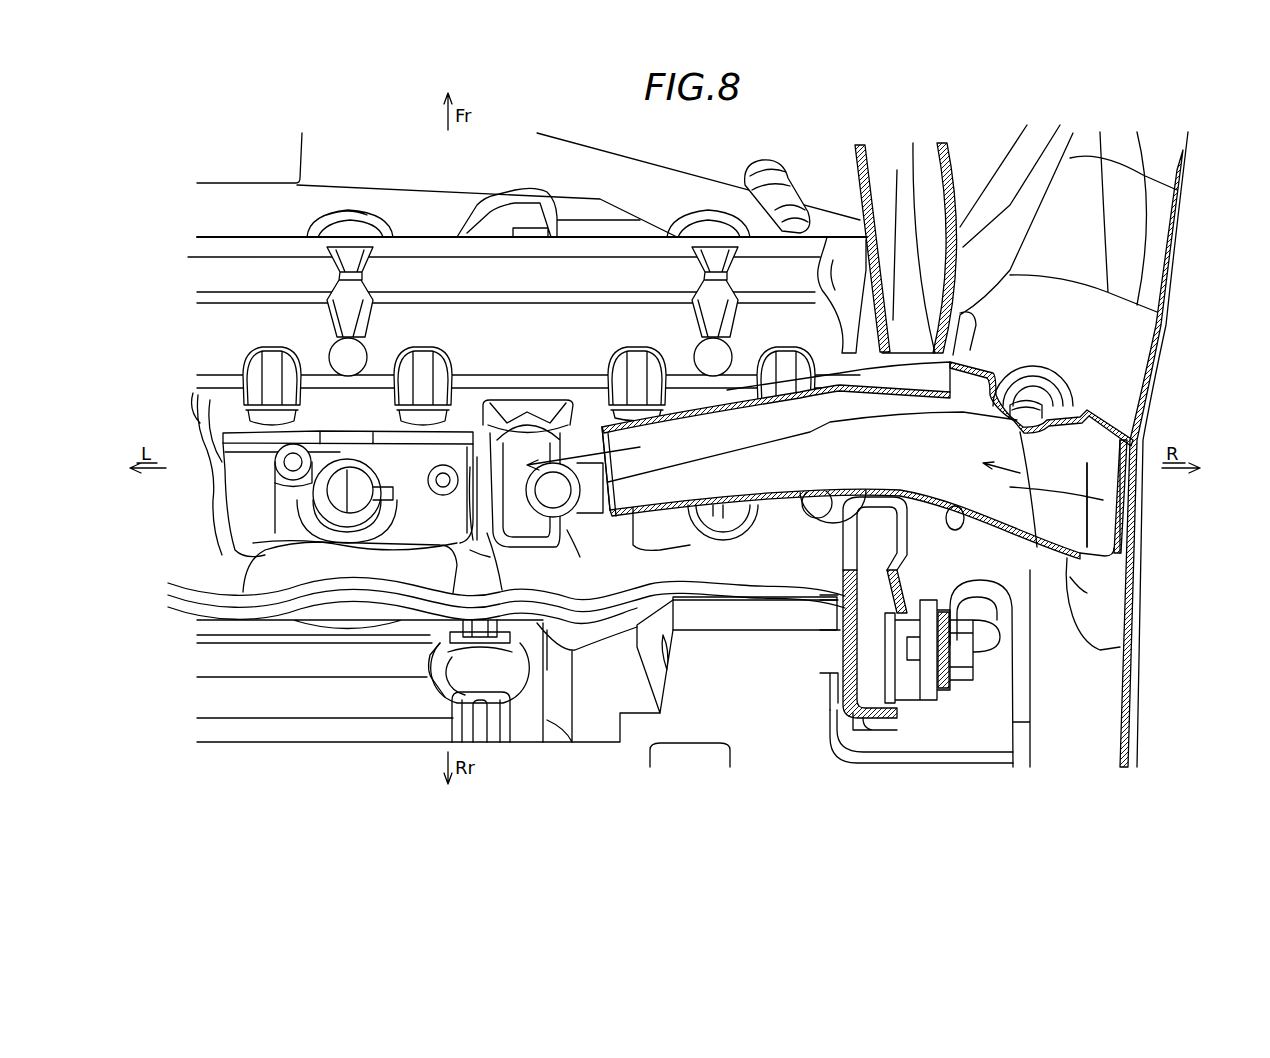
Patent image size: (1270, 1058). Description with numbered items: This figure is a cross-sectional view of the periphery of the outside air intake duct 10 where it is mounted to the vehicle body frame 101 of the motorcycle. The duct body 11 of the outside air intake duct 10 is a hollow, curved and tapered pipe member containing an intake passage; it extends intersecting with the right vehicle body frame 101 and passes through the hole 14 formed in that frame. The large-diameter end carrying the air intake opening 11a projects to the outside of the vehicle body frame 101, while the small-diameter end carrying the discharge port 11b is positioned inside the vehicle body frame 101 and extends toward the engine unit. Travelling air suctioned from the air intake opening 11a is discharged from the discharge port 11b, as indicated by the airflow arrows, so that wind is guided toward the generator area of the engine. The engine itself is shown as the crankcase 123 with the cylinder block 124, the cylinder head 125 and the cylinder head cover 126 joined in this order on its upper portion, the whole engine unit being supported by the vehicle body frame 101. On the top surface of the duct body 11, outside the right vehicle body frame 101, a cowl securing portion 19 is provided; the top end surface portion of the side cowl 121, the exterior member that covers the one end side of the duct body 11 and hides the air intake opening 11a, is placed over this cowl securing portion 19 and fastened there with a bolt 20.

The outside air intake duct 10 is at (867, 355).
The duct body 11 is at (830, 506).
The air intake opening 11a is at (1100, 517).
The discharge port 11b is at (580, 398).
The hole 14 is at (803, 393).
The cowl securing portion 19 is at (1033, 392).
The bolt 20 is at (990, 407).
The vehicle body frame 101 is at (950, 153).
The side cowl 121 is at (1093, 355).
The crankcase 123 is at (605, 695).
The cylinder block 124 is at (587, 682).
The cylinder head 125 is at (470, 400).
The cylinder head cover 126 is at (237, 235).